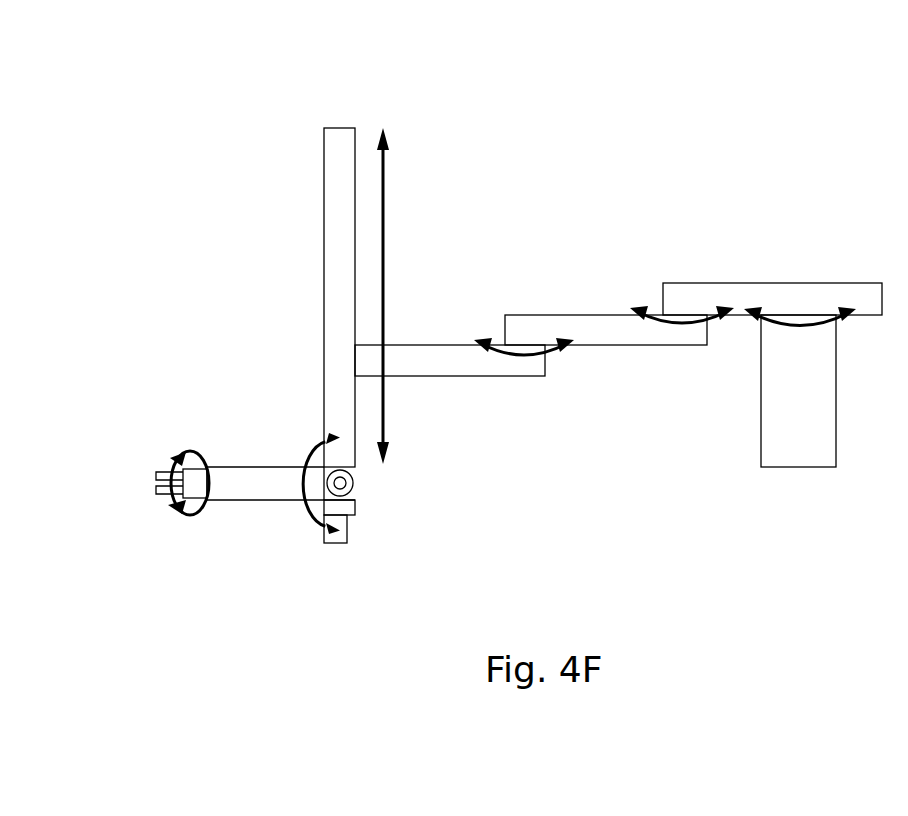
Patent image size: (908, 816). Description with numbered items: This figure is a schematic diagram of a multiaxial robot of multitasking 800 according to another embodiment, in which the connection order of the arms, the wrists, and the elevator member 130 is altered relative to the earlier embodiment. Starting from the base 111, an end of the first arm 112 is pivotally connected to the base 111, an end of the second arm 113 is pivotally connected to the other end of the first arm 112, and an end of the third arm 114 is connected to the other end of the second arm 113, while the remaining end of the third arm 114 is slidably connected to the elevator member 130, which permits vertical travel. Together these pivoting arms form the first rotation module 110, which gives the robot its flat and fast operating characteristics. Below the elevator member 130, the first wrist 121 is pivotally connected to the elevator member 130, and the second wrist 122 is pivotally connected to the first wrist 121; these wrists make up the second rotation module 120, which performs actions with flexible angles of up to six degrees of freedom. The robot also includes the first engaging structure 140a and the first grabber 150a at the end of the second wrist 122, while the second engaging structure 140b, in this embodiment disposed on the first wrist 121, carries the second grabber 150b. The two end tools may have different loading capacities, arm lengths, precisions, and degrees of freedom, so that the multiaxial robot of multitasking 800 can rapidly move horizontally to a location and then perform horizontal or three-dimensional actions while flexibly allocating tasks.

The multiaxial robot of multitasking 800 is at (159, 36).
The elevator member 130 is at (340, 177).
The second rotation module 120 is at (250, 411).
The first wrist 121 is at (210, 466).
The second wrist 122 is at (178, 435).
The first grabber 150a is at (175, 502).
The first engaging structure 140a is at (188, 510).
The second grabber 150b is at (341, 525).
The second engaging structure 140b is at (363, 505).
The first rotation module 110 is at (618, 424).
The base 111 is at (779, 409).
The first arm 112 is at (678, 305).
The second arm 113 is at (608, 325).
The third arm 114 is at (523, 363).